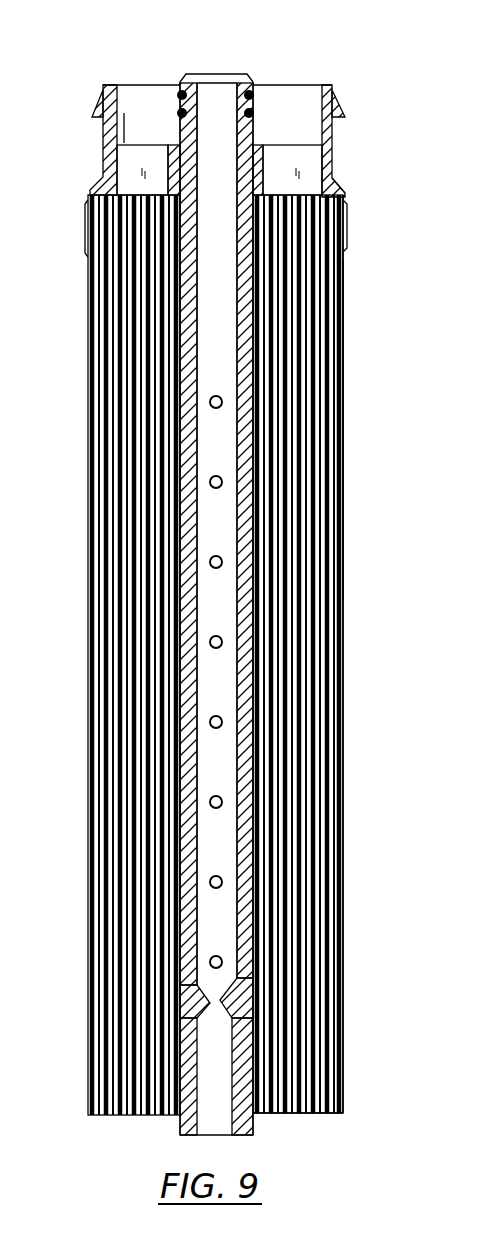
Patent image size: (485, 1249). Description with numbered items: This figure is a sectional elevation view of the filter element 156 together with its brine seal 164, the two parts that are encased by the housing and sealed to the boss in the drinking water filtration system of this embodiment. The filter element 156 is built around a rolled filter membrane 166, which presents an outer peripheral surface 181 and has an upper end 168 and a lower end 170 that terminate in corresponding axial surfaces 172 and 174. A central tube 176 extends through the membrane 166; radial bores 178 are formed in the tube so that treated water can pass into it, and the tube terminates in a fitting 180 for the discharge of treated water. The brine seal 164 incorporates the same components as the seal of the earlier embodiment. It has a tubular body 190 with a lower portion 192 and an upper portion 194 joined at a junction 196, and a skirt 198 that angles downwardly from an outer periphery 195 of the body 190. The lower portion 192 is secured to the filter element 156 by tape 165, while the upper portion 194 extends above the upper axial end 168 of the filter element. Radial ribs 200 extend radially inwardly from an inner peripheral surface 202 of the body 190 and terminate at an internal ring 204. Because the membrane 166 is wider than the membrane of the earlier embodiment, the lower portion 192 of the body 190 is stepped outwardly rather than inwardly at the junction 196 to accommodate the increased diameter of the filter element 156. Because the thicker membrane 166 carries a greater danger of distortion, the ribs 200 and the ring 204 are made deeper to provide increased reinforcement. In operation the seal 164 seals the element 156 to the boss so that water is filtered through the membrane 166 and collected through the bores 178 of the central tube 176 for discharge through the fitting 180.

The filter element 156 is at (348, 487).
The brine seal 164 is at (345, 87).
The tape 165 is at (345, 293).
The rolled filter membrane 166 is at (343, 430).
The upper end 168 is at (86, 240).
The lower end 170 is at (343, 1080).
The axial surface 172 is at (142, 194).
The axial surface 174 is at (328, 1118).
The central tube 176 is at (193, 643).
The radial bores 178 is at (211, 724).
The fitting 180 is at (187, 80).
The outer peripheral surface 181 is at (343, 587).
The tubular body 190 is at (97, 85).
The lower portion 192 is at (348, 232).
The upper portion 194 is at (333, 143).
The outer periphery 195 is at (99, 117).
The junction 196 is at (340, 186).
The skirt 198 is at (341, 112).
The radial ribs 200 is at (138, 142).
The inner peripheral surface 202 is at (318, 90).
The internal ring 204 is at (257, 140).